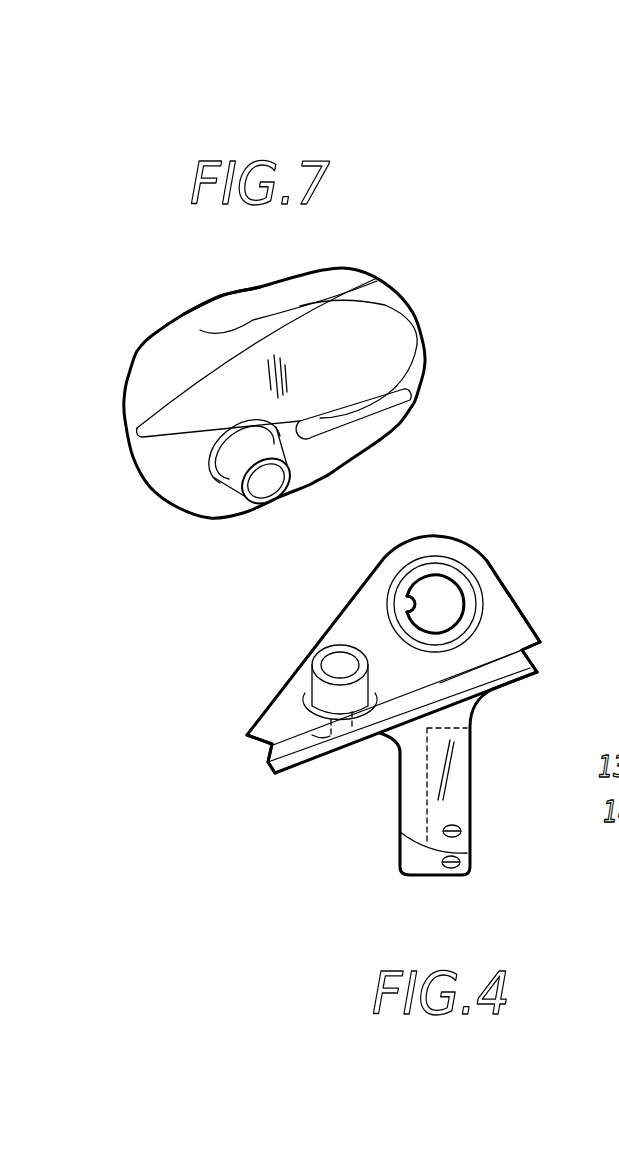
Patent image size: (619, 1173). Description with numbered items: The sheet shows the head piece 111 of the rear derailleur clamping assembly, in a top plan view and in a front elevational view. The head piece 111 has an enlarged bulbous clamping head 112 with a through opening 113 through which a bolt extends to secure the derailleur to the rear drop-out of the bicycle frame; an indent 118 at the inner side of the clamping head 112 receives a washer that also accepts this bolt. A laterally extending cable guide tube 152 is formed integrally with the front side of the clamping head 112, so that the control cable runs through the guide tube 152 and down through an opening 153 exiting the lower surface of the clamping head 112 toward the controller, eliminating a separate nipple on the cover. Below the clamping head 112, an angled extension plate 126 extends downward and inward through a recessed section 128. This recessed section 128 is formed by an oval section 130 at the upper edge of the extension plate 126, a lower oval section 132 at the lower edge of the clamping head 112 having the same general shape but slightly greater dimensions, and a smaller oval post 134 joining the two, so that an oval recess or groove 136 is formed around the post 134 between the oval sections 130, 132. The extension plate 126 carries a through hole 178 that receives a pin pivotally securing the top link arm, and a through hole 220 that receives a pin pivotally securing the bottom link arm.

In FIG. 7, the head piece 111 is at (436, 331).
In FIG. 4, the head piece 111 is at (438, 521).
In FIG. 7, the bulbous clamping head 112 is at (382, 327).
In FIG. 4, the bulbous clamping head 112 is at (383, 558).
In FIG. 4, the through opening 113 is at (416, 596).
In FIG. 7, the indent 118 is at (250, 317).
In FIG. 4, the angled extension plate 126 is at (397, 810).
In FIG. 4, the recessed section 128 is at (533, 658).
In FIG. 4, the oval section 130 is at (527, 680).
In FIG. 4, the lower oval section 132 is at (528, 625).
In FIG. 4, the oval post 134 is at (267, 748).
In FIG. 4, the oval recess or groove 136 is at (497, 670).
In FIG. 7, the cable guide tube 152 is at (240, 465).
In FIG. 4, the cable guide tube 152 is at (313, 665).
In FIG. 4, the opening 153 is at (322, 737).
In FIG. 4, the through hole 178 is at (460, 825).
In FIG. 4, the through hole 220 is at (448, 870).